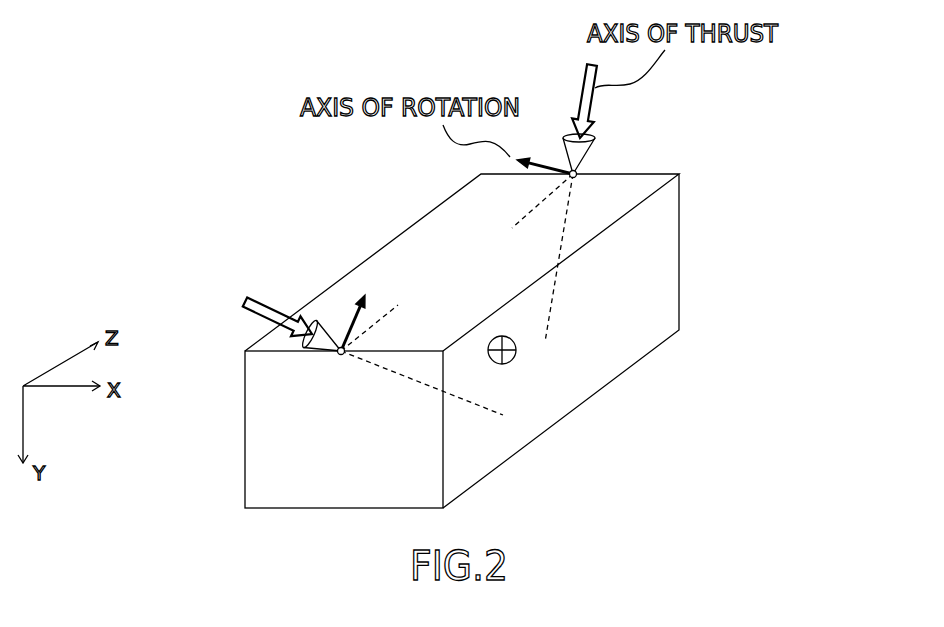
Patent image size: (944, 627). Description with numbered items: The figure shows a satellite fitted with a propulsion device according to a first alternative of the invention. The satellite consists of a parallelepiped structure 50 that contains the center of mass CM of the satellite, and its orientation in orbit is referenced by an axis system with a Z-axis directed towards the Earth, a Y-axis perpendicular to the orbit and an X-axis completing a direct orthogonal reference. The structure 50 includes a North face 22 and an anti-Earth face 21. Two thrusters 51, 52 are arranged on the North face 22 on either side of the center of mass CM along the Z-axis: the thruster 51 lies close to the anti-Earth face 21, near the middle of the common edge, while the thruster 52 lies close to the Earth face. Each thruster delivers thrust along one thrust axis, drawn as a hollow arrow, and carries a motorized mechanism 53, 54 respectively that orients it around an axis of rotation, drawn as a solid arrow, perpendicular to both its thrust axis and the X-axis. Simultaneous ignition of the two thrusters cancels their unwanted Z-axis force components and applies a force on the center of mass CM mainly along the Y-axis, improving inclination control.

The anti-Earth face 21 is at (258, 462).
The North face 22 is at (433, 245).
The parallelepiped structure 50 is at (467, 343).
The thruster 51 is at (330, 322).
The thruster 52 is at (567, 147).
The motorized mechanism 53 is at (341, 355).
The motorized mechanism 54 is at (590, 166).
The center of mass CM is at (516, 350).